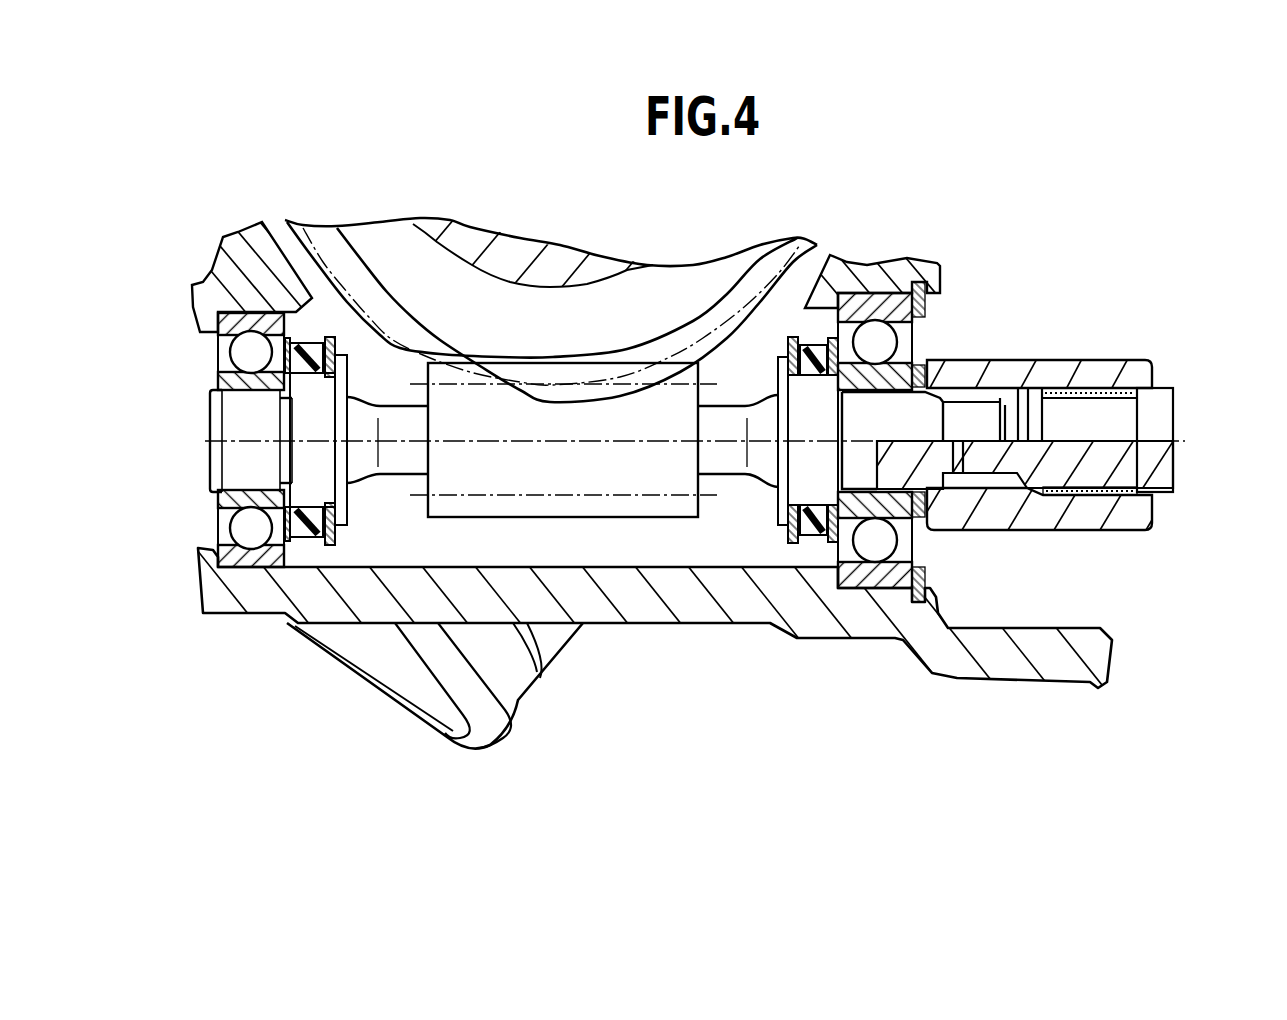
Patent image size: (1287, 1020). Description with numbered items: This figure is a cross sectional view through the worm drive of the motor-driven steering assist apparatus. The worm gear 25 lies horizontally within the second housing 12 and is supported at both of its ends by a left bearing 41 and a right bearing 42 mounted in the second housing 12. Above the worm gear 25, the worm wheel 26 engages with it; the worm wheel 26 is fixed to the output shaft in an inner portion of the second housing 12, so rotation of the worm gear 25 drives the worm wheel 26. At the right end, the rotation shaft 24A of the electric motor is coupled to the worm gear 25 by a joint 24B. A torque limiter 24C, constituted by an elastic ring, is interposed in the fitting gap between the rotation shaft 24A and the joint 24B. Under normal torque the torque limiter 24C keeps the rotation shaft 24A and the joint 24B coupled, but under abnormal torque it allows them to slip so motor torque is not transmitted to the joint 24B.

The second housing 12 is at (630, 612).
The worm gear 25 is at (588, 518).
The worm wheel 26 is at (427, 340).
The bearing 41 is at (251, 540).
The bearing 42 is at (875, 550).
The rotation shaft 24A is at (1150, 477).
The joint 24B is at (1033, 513).
The torque limiter 24C is at (1110, 494).